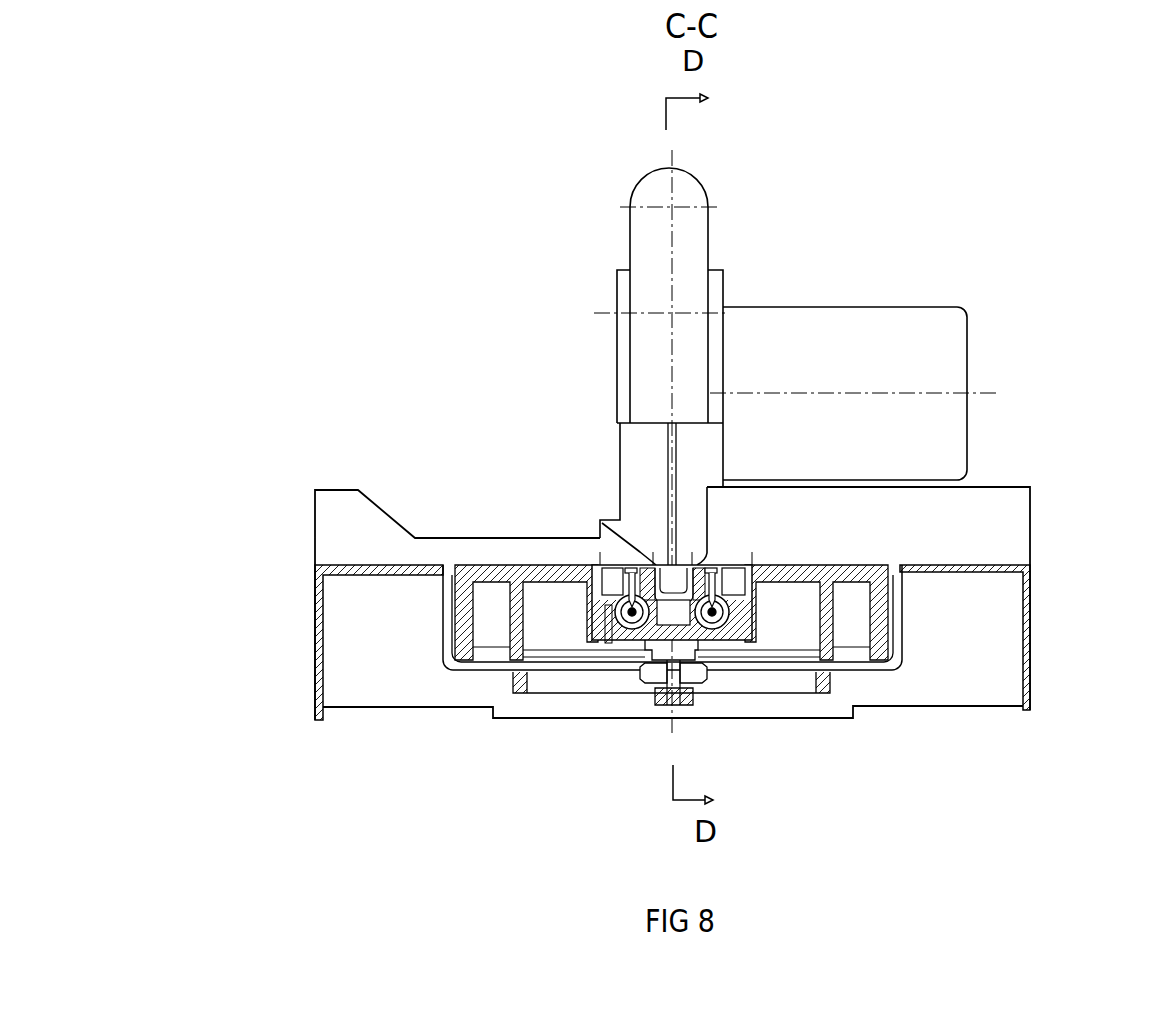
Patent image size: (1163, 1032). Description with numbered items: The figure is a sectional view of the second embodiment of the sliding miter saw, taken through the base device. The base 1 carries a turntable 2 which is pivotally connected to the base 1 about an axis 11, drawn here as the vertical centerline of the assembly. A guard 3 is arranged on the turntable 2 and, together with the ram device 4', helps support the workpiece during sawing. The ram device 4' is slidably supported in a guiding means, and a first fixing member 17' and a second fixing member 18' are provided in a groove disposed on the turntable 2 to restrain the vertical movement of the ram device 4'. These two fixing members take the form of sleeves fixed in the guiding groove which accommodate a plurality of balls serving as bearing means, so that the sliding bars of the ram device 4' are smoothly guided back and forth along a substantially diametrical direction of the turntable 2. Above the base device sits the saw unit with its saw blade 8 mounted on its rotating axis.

The base 1 is at (1028, 603).
The turntable 2 is at (913, 566).
The guard 3 is at (332, 535).
The ram device 4' is at (587, 476).
The saw blade 8 is at (668, 496).
The axis 11 is at (663, 705).
The first fixing member 17' is at (593, 668).
The second fixing member 18' is at (761, 665).